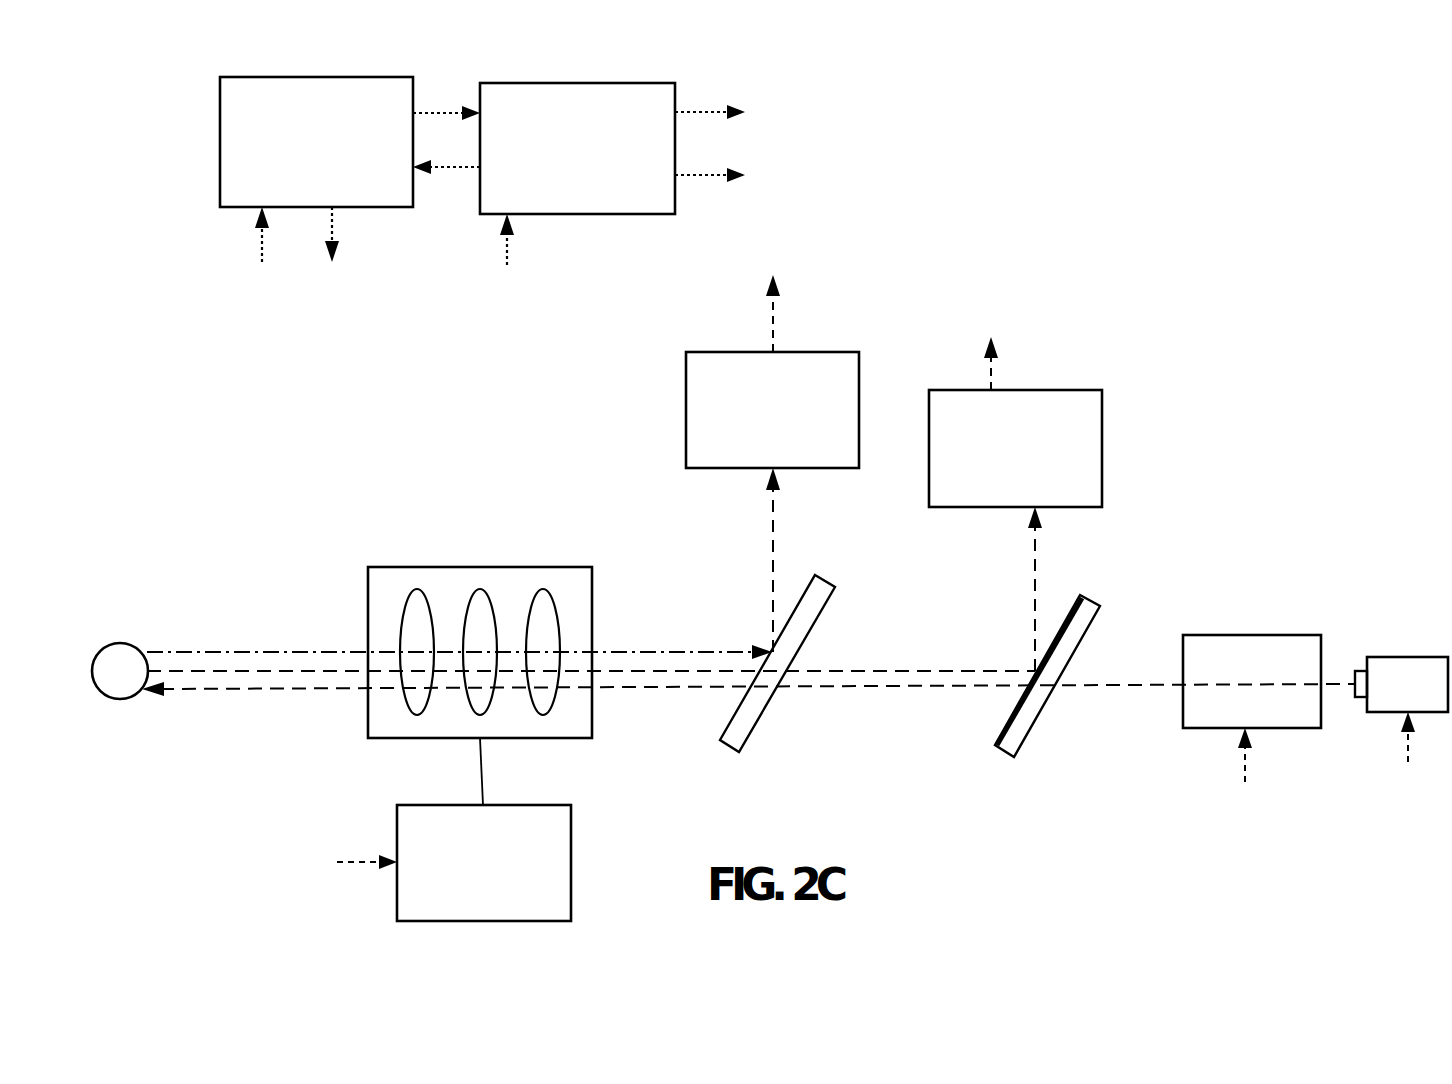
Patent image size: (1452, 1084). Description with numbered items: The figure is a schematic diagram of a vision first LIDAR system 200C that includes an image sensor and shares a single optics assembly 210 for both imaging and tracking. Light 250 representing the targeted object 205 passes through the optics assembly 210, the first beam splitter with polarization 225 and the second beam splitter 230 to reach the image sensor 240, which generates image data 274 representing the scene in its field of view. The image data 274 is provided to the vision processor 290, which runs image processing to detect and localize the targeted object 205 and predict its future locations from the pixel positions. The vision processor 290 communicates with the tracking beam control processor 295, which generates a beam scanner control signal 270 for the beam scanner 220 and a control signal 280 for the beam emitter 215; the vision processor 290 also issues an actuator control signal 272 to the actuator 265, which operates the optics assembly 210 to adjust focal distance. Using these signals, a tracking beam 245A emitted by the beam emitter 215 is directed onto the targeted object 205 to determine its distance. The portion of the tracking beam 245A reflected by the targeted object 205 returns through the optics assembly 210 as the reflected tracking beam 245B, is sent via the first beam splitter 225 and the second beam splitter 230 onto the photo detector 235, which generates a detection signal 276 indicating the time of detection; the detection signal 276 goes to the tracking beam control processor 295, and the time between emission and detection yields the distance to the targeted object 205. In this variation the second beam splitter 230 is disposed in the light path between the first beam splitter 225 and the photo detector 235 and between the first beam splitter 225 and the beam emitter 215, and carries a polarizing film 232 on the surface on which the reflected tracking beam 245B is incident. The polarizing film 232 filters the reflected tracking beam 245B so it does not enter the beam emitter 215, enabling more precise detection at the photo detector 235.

The vision first LIDAR system 200C is at (138, 156).
The targeted object 205 is at (120, 643).
The optics assembly 210 is at (396, 567).
The beam emitter 215 is at (1370, 657).
The beam scanner 220 is at (1283, 635).
The first beam splitter with polarization 225 is at (828, 582).
The second beam splitter 230 is at (1085, 637).
The polarizing film 232 is at (1085, 597).
The photo detector 235 is at (996, 481).
The image sensor 240 is at (753, 439).
The tracking beam 245A is at (249, 690).
The reflected tracking beam 245B is at (1037, 585).
The light 250 is at (212, 652).
The actuator 265 is at (465, 887).
The beam scanner control signal 270 is at (976, 460).
The actuator control signal 272 is at (347, 542).
The image data 274 is at (527, 279).
The detection signal 276 is at (756, 302).
The control signal 280 is at (1056, 483).
The vision processor 290 is at (297, 171).
The tracking beam control processor 295 is at (559, 206).